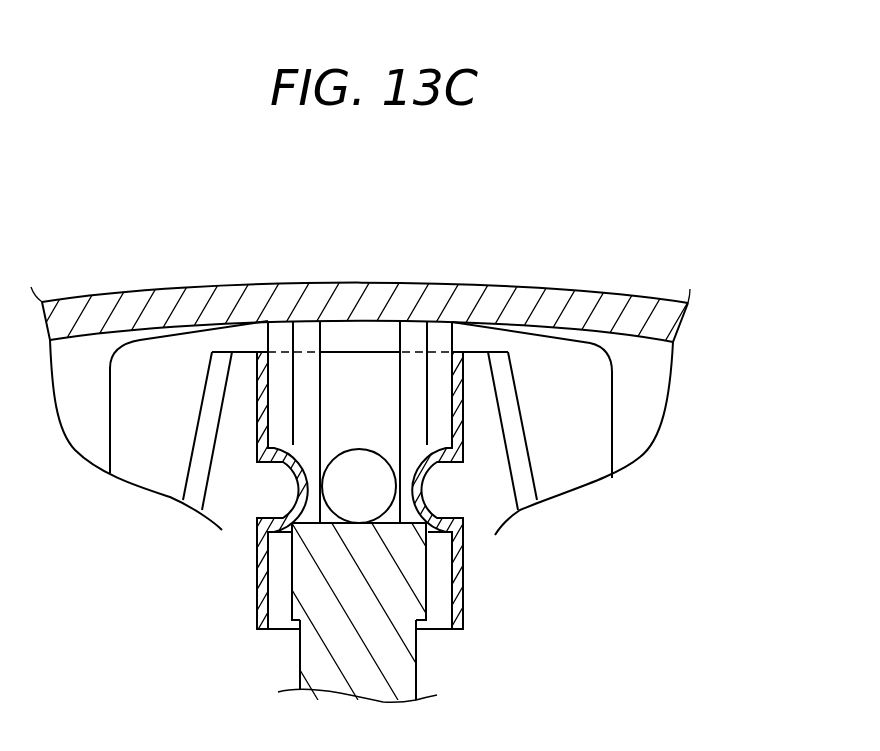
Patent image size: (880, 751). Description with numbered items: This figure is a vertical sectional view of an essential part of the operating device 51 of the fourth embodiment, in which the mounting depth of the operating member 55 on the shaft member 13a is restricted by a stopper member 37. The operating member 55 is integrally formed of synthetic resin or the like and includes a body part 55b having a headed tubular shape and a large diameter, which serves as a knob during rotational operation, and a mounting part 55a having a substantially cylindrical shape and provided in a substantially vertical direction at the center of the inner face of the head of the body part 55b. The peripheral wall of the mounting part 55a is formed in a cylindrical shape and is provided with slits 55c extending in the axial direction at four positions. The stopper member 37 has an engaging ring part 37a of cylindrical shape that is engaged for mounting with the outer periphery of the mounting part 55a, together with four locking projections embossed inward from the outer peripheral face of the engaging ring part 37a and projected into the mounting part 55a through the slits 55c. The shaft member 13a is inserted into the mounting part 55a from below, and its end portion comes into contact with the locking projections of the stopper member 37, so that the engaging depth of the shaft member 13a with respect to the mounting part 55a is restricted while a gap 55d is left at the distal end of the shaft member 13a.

The operating device 51 is at (200, 260).
The operating member 55 is at (604, 289).
The mounting part 55a is at (268, 430).
The body part 55b is at (655, 322).
The slits 55c is at (322, 420).
The gap 55d is at (375, 340).
The stopper member 37 is at (473, 556).
The engaging ring part 37a is at (465, 490).
The shaft member 13a is at (325, 655).